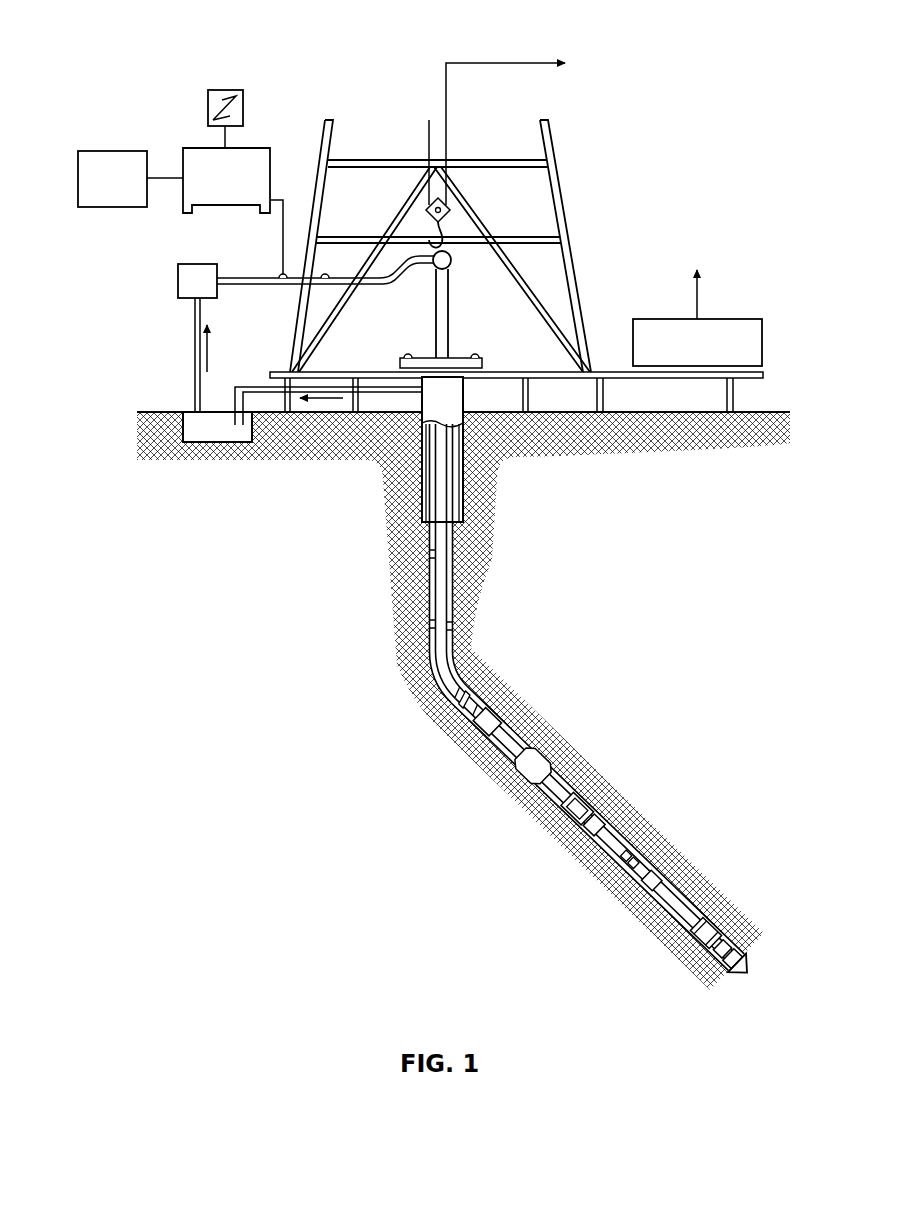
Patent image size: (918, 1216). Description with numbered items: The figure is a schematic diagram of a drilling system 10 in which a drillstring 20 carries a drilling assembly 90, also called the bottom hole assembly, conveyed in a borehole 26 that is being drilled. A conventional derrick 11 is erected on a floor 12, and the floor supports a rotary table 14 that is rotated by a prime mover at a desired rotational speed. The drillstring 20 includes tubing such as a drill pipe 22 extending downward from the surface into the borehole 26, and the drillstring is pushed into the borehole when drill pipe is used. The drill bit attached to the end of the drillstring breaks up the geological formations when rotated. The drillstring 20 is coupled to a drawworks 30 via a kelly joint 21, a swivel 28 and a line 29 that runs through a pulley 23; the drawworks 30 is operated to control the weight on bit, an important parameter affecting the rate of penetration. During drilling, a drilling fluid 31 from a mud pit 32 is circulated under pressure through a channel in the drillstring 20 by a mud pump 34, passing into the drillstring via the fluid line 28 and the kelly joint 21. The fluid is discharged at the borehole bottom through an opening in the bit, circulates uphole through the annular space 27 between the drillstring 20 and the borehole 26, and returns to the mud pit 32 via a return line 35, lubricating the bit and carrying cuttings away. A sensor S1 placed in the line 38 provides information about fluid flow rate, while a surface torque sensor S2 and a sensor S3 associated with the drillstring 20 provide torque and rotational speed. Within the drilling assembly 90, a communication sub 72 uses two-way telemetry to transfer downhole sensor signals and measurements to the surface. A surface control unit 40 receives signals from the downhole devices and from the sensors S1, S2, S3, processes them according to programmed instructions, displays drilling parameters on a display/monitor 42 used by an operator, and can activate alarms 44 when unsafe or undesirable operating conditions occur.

The drilling system 10 is at (163, 36).
The derrick 11 is at (572, 248).
The floor 12 is at (597, 370).
The rotary table 14 is at (462, 357).
The drillstring 20 is at (453, 602).
The kelly joint 21 is at (452, 300).
The drill pipe 22 is at (425, 582).
The pulley 23 is at (447, 212).
The borehole 26 is at (462, 667).
The annular space 27 is at (488, 694).
The swivel 28 is at (430, 266).
The line 29 is at (448, 130).
The drawworks 30 is at (726, 319).
The drilling fluid 31 is at (190, 414).
The mud pit 32 is at (213, 443).
The mud pump 34 is at (178, 282).
The return line 35 is at (390, 395).
The line 38 is at (193, 350).
The surface control unit 40 is at (205, 148).
The display/monitor 42 is at (227, 90).
The alarms 44 is at (113, 151).
The communication sub 72 is at (428, 676).
The drilling assembly 90 is at (612, 728).
The sensor S1 is at (327, 276).
The surface torque sensor S2 is at (476, 355).
The sensor S3 is at (409, 355).